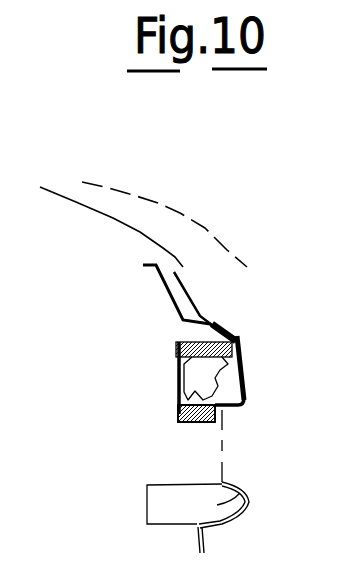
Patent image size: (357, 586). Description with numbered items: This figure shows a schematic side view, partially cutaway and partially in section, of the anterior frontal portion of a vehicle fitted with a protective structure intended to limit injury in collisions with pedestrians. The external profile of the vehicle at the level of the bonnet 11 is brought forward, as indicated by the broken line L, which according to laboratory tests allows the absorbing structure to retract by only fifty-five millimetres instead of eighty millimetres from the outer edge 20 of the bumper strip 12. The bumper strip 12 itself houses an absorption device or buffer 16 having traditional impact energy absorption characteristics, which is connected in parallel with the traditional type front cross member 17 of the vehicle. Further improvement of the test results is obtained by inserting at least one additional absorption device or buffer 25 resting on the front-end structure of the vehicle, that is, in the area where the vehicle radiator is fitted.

The broken line L is at (167, 210).
The bonnet 11 is at (201, 304).
The absorption device or buffer 16 is at (229, 331).
The bumper strip 12 is at (230, 372).
The outer edge 20 is at (250, 387).
The front cross member 17 is at (184, 378).
The absorption device or buffer 25 is at (243, 487).